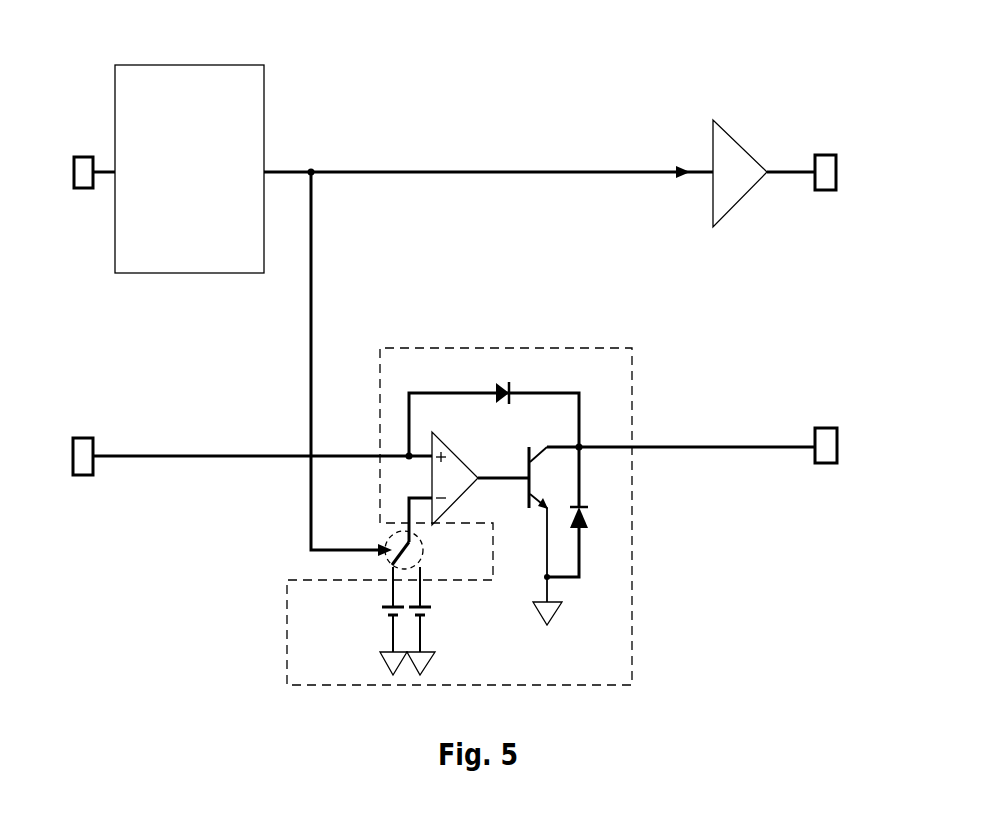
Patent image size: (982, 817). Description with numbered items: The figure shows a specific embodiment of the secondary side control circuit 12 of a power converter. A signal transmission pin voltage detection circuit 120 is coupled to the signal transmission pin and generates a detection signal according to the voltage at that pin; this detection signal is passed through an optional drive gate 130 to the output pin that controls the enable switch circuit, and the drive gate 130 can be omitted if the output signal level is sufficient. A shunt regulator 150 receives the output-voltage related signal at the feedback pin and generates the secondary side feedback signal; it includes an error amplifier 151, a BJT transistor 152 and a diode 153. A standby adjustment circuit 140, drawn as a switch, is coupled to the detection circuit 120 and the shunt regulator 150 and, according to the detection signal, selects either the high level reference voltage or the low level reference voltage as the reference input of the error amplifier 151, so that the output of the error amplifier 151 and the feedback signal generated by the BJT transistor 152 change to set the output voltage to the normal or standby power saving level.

The secondary side control circuit 12 is at (839, 91).
The signal transmission pin voltage detection circuit 120 is at (176, 259).
The drive gate 130 is at (713, 200).
The standby adjustment circuit 140 is at (423, 559).
The shunt regulator 150 is at (613, 377).
The error amplifier 151 is at (456, 455).
The BJT transistor 152 is at (551, 512).
The diode 153 is at (581, 529).